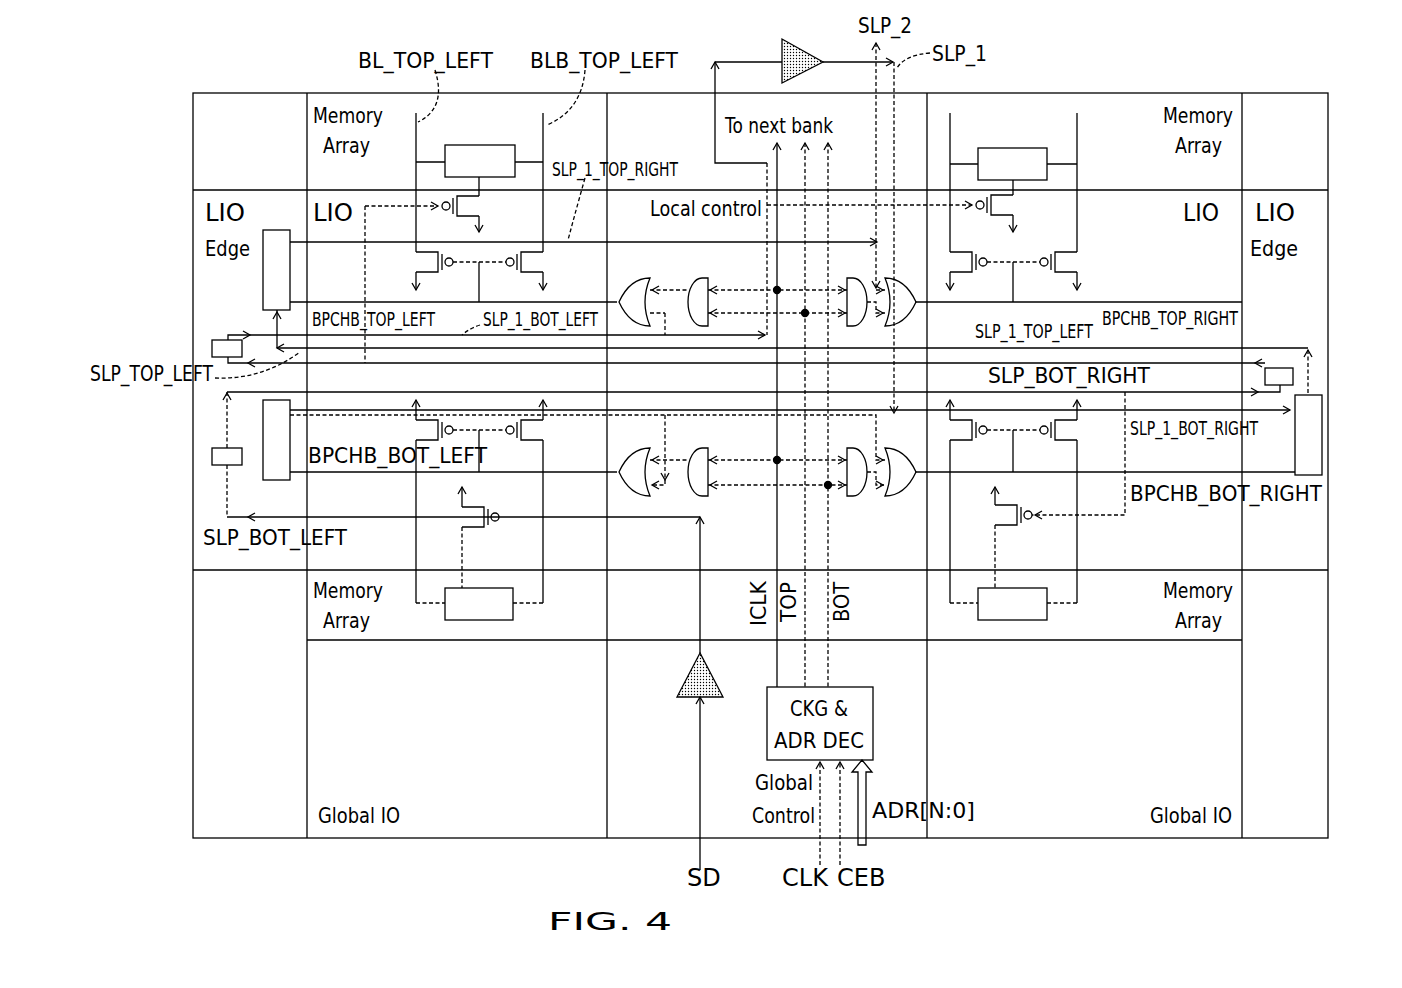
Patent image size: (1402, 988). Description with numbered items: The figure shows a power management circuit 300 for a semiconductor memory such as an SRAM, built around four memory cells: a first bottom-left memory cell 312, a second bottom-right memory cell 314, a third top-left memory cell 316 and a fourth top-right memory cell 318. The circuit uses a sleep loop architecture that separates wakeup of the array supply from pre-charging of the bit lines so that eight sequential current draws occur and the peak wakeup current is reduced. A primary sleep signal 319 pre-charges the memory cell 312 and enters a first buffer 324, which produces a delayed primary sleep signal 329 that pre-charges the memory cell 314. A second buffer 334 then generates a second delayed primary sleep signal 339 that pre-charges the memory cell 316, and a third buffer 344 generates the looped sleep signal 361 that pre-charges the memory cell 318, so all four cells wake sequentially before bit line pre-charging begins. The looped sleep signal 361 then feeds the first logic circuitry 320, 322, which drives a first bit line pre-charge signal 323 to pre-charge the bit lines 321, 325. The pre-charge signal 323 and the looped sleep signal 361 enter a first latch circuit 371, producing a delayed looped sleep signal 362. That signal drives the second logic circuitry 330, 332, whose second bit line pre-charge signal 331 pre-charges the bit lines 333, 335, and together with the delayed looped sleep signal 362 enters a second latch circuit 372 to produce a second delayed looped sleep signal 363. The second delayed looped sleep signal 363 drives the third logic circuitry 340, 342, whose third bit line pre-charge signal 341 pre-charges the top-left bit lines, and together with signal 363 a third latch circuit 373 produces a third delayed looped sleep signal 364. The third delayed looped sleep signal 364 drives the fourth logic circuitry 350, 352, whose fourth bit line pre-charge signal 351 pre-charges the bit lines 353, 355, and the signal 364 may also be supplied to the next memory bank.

The power management circuit 300 is at (155, 76).
The first memory cell 312 is at (479, 620).
The second memory cell 314 is at (1013, 620).
The third memory cell 316 is at (455, 145).
The fourth memory cell 318 is at (993, 148).
The primary sleep signal 319 is at (566, 520).
The first logic circuitry 320 is at (700, 448).
The memory cell bit line 321 is at (417, 603).
The first logic circuitry 322 is at (630, 448).
The first bit line pre-charge signal 323 is at (548, 468).
The first buffer 324 is at (220, 448).
The memory cell bit line 325 is at (543, 603).
The delayed primary sleep signal 329 is at (1175, 392).
The second logic circuitry 330 is at (857, 497).
The second bit line pre-charge signal 331 is at (1175, 472).
The second logic circuitry 332 is at (900, 497).
The memory cell bit line 333 is at (950, 603).
The second buffer 334 is at (1287, 368).
The memory cell bit line 335 is at (1077, 603).
The second delayed primary sleep signal 339 is at (430, 374).
The third logic circuitry 340 is at (700, 278).
The third bit line pre-charge signal 341 is at (330, 303).
The third logic circuitry 342 is at (630, 278).
The third buffer 344 is at (228, 340).
The fourth logic circuitry 350 is at (855, 278).
The fourth bit line pre-charge signal 351 is at (1205, 300).
The fourth logic circuitry 352 is at (912, 280).
The memory cell bit line 353 is at (950, 145).
The memory cell bit line 355 is at (1080, 137).
The looped sleep signal 361 is at (714, 135).
The delayed looped sleep signal 362 is at (1100, 416).
The second delayed looped sleep signal 363 is at (950, 350).
The third delayed looped sleep signal 364 is at (479, 228).
The first latch circuit 371 is at (263, 470).
The second latch circuit 372 is at (1322, 432).
The third latch circuit 373 is at (263, 278).